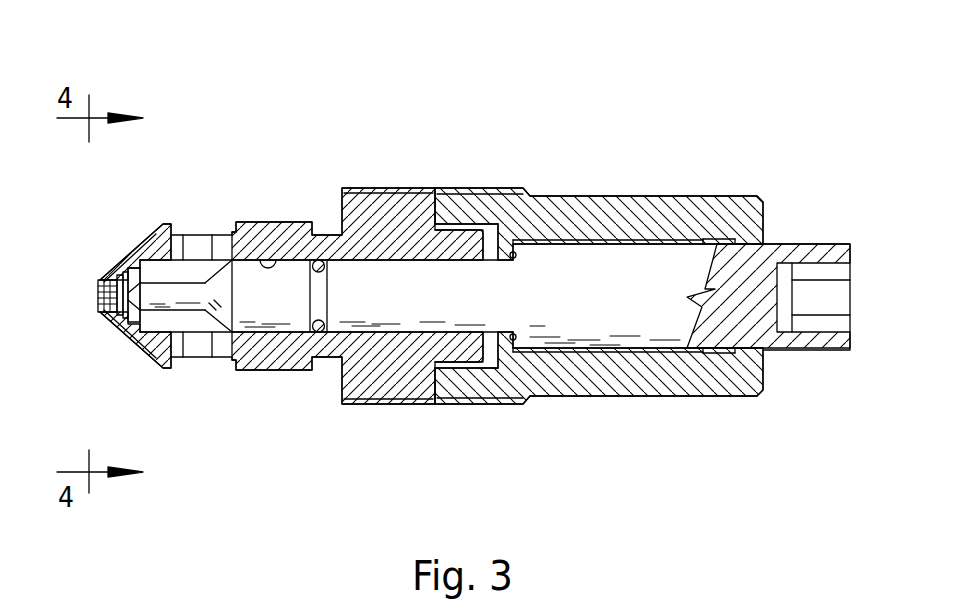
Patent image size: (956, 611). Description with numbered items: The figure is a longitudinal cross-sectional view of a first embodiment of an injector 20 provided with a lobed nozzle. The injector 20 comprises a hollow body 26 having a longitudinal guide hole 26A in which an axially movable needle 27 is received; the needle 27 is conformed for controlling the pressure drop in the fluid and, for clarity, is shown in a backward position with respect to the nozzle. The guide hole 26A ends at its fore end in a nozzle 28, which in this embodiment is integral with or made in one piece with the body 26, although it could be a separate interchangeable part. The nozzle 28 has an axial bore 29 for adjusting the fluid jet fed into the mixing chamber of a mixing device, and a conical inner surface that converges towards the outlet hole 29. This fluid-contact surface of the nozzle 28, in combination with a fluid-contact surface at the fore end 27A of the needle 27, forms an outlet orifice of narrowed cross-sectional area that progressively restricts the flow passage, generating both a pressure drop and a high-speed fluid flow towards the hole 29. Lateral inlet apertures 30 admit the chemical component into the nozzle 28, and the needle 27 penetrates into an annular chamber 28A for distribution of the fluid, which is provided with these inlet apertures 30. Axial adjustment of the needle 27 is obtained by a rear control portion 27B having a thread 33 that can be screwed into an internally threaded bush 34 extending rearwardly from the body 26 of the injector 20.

The injector 20 is at (578, 151).
The hollow body 26 is at (387, 207).
The longitudinal guide hole 26A is at (272, 265).
The needle 27 is at (388, 307).
The fore end of the needle 27A is at (162, 294).
The rear control portion 27B is at (683, 267).
The nozzle 28 is at (153, 243).
The annular chamber 28A is at (207, 268).
The axial bore 29 is at (98, 293).
The lateral inlet apertures 30 is at (200, 242).
The thread 33 is at (663, 357).
The internally threaded bush 34 is at (598, 380).